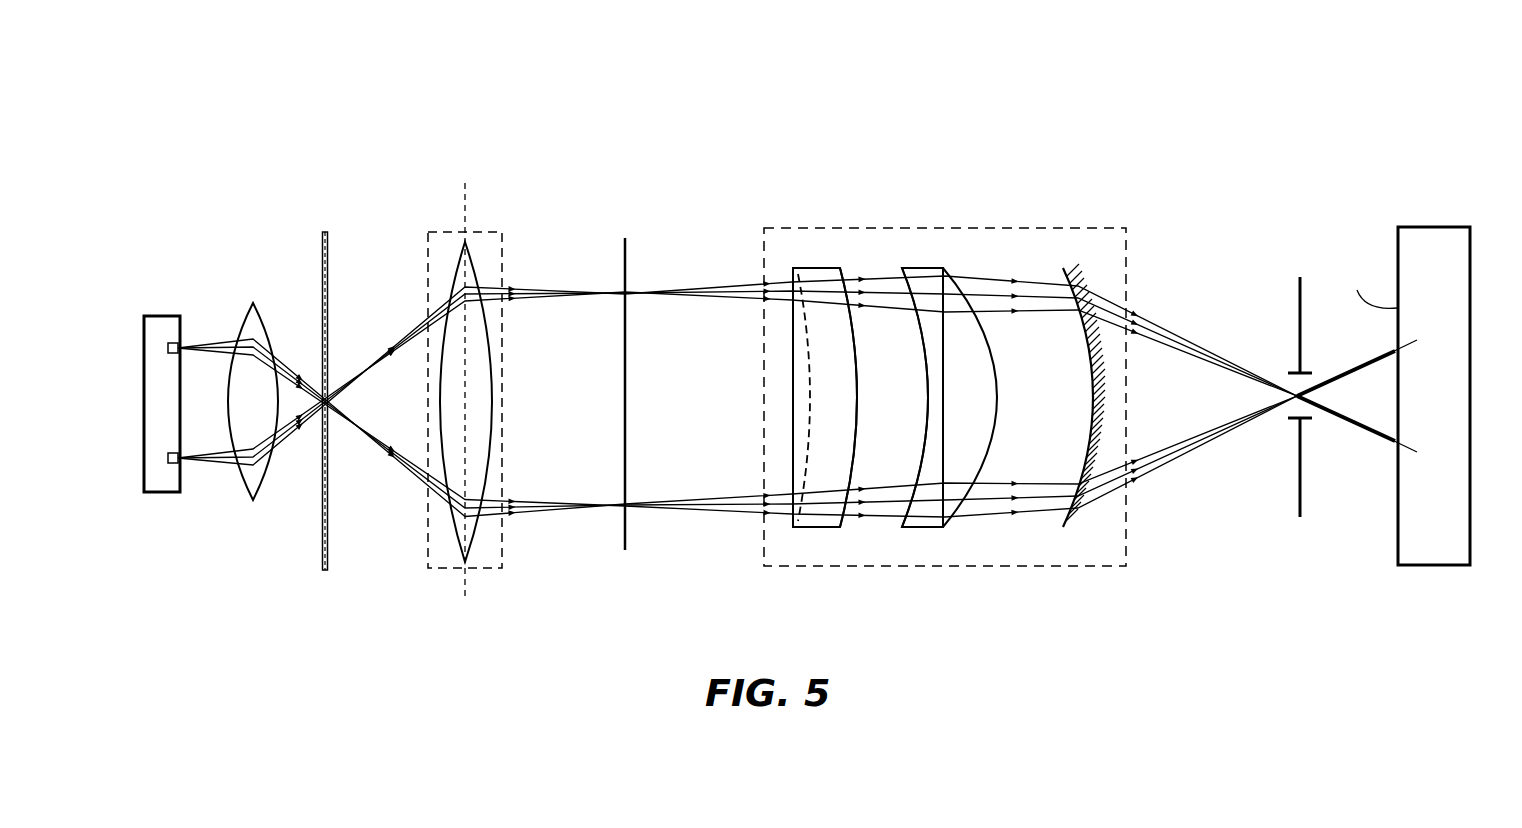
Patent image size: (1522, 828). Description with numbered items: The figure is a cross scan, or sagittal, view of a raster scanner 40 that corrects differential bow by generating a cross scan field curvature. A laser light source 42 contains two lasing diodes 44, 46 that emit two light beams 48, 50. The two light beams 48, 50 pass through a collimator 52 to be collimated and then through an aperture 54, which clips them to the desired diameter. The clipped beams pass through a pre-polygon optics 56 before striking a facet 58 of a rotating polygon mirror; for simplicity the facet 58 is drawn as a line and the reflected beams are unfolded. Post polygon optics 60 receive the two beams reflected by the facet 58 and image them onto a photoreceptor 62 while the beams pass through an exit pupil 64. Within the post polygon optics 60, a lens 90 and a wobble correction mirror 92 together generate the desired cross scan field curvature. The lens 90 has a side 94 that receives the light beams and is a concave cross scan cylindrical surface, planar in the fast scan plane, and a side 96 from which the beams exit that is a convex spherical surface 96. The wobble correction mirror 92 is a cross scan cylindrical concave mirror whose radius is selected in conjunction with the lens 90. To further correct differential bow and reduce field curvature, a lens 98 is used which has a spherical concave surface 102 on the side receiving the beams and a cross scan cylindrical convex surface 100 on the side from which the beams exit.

The raster scanner 40 is at (516, 86).
The laser light source 42 is at (166, 315).
The lasing diode 44 is at (191, 336).
The lasing diode 46 is at (198, 470).
The light beam 48 is at (208, 340).
The light beam 50 is at (213, 458).
The collimator 52 is at (268, 484).
The aperture 54 is at (332, 513).
The pre-polygon optics 56 is at (503, 533).
The facet 58 is at (629, 527).
The post polygon optics 60 is at (816, 226).
The photoreceptor 62 is at (1468, 282).
The exit pupil 64 is at (1302, 493).
The lens 90 is at (926, 529).
The wobble correction mirror 92 is at (1068, 515).
The cross scan cylindrical surface 94 is at (927, 412).
The spherical surface 96 is at (995, 412).
The lens 98 is at (800, 529).
The cross scan cylindrical convex surface 100 is at (848, 326).
The spherical concave surface 102 is at (800, 344).